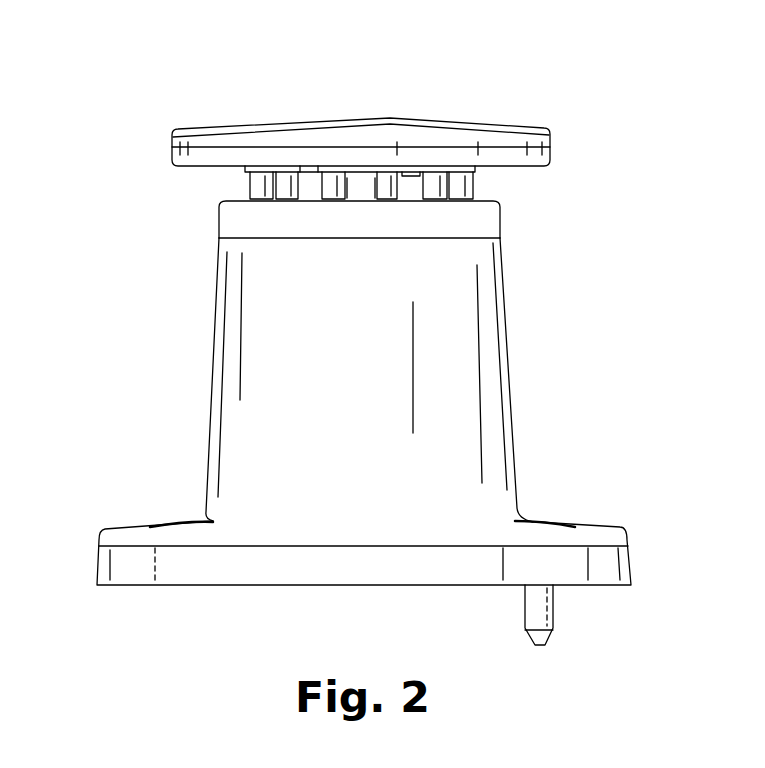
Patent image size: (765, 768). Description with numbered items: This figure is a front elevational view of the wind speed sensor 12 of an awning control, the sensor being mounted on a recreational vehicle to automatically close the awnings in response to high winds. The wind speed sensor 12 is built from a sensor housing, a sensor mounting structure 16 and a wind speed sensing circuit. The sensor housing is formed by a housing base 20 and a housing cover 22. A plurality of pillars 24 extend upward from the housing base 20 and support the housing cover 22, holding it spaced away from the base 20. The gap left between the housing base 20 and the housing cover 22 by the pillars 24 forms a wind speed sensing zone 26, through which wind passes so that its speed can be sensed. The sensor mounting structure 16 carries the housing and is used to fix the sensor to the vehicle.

The wind speed sensor 12 is at (339, 331).
The sensor mounting structure 16 is at (212, 388).
The housing base 20 is at (219, 223).
The housing cover 22 is at (283, 122).
The pillars 24 is at (245, 179).
The wind speed sensing zone 26 is at (359, 178).